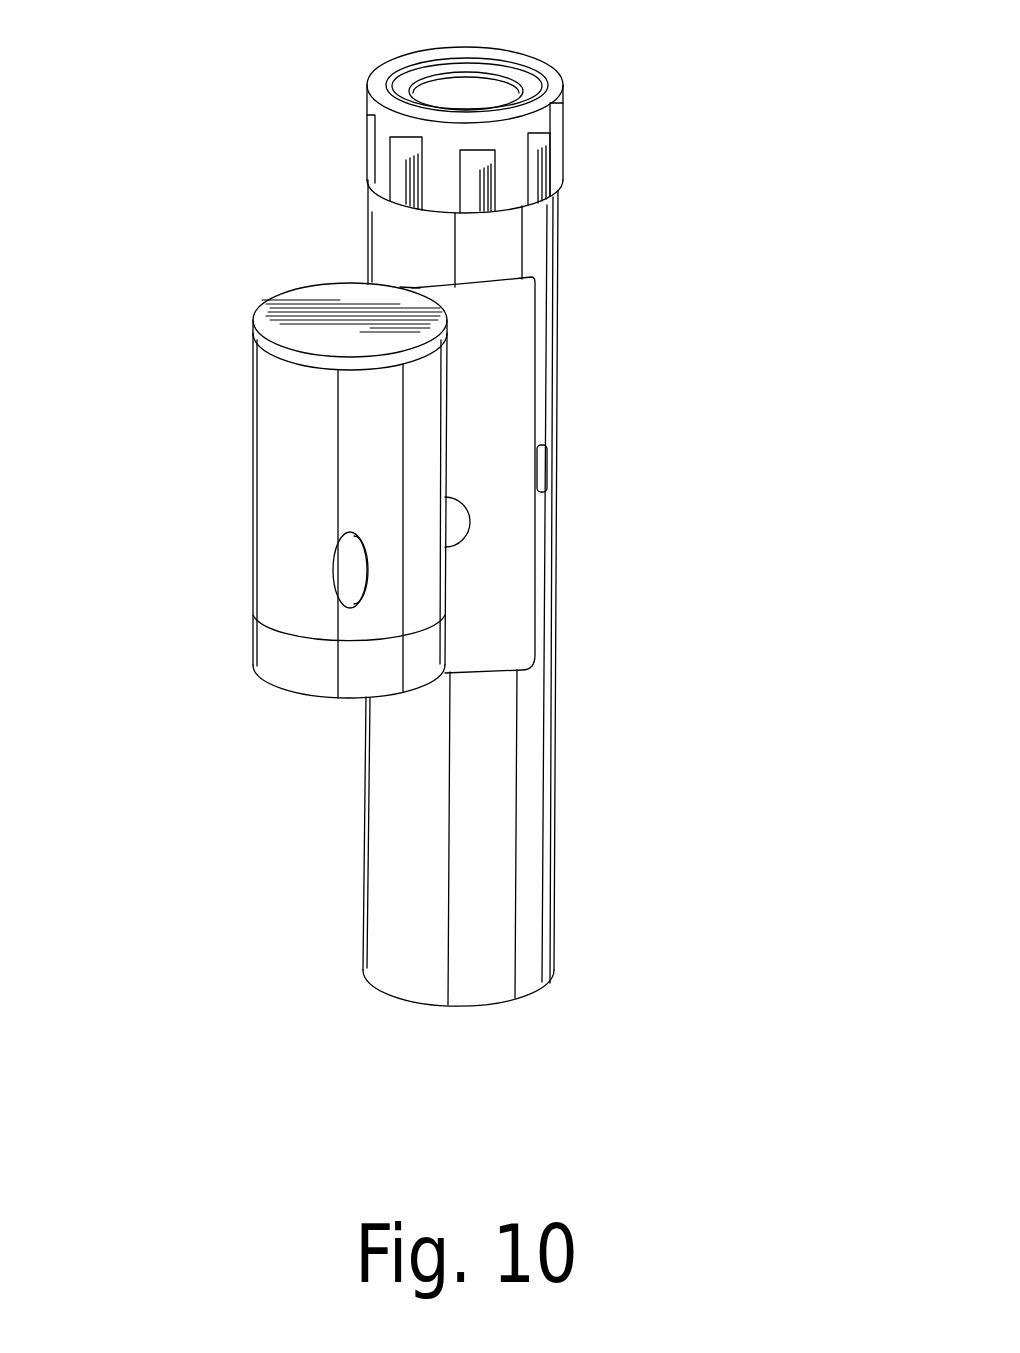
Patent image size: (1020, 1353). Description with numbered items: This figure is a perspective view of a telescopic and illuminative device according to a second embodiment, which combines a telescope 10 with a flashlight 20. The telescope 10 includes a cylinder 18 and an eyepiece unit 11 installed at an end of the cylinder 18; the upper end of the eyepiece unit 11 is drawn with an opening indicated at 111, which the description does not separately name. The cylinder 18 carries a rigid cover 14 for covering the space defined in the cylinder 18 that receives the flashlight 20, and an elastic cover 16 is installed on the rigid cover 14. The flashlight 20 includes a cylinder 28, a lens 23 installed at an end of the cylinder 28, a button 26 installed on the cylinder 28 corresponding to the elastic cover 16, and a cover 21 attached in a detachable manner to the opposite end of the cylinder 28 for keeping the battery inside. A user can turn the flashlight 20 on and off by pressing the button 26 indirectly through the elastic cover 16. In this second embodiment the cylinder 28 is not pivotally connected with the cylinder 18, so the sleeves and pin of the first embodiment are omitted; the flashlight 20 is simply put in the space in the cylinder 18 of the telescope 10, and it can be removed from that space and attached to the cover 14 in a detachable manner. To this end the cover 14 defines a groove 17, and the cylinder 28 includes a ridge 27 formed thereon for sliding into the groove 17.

The telescope 10 is at (582, 738).
The eyepiece unit 11 is at (592, 51).
The opening of cap 111 is at (562, 118).
The rigid cover 14 is at (490, 369).
The elastic cover 16 is at (455, 521).
The groove 17 is at (417, 287).
The cylinder 18 is at (507, 832).
The flashlight 20 is at (228, 380).
The cover 21 is at (253, 318).
The lens 23 is at (270, 655).
The button 26 is at (350, 572).
The ridge 27 is at (412, 286).
The cylinder 28 is at (297, 450).